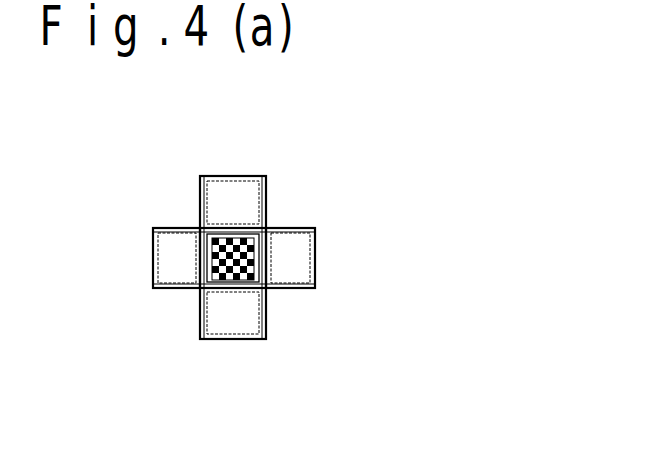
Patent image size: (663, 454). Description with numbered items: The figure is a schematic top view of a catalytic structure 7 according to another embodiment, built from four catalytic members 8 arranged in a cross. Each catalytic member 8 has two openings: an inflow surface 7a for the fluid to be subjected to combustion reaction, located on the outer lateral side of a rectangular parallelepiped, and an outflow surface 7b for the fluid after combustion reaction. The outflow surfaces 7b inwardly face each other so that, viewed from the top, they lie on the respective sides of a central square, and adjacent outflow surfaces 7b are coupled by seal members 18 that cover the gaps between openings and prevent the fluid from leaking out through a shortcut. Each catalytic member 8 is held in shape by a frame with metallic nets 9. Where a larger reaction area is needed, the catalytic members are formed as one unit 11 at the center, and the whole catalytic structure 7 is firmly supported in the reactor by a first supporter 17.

The catalytic structure 7 is at (428, 145).
The inflow surface 7a is at (231, 183).
The outflow surface 7b is at (235, 229).
The catalytic member 8 is at (244, 188).
The frame with metallic nets 9 is at (213, 176).
The one-unit catalytic members 11 is at (269, 293).
The first supporter 17 is at (285, 296).
The seal member 18 is at (268, 192).